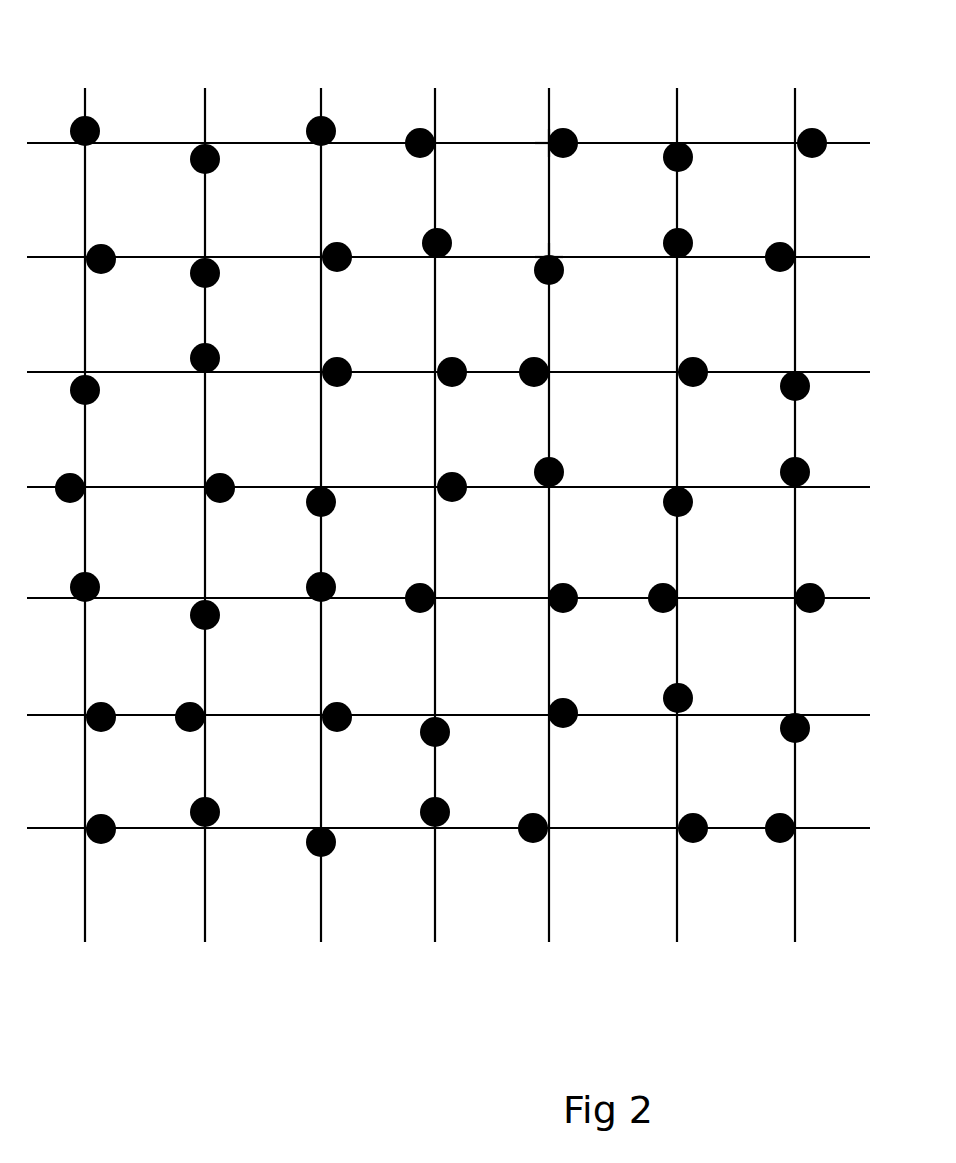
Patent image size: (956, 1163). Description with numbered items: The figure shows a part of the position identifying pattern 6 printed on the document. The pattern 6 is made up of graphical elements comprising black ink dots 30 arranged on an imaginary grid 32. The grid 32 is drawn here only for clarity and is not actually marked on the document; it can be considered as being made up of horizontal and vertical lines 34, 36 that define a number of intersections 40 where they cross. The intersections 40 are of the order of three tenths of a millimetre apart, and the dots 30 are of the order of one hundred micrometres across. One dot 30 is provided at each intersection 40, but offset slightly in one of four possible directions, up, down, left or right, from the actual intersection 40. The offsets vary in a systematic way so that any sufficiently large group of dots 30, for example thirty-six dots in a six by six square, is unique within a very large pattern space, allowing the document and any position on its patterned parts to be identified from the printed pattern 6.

The position identifying pattern 6 is at (448, 477).
The black ink dot 30 is at (436, 142).
The imaginary grid 32 is at (551, 108).
The horizontal line 34 is at (733, 142).
The vertical line 36 is at (679, 110).
The intersection 40 is at (547, 146).